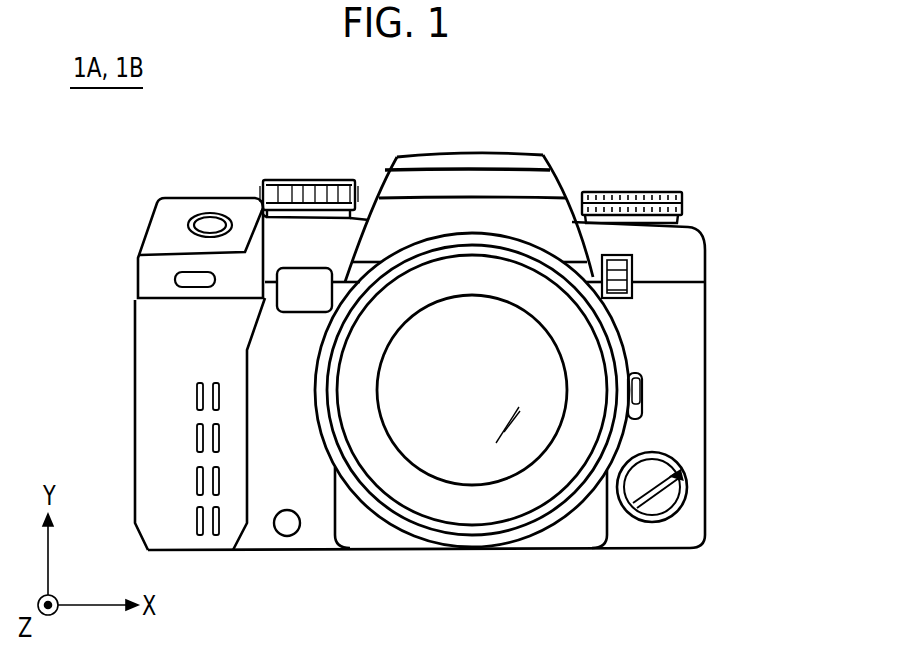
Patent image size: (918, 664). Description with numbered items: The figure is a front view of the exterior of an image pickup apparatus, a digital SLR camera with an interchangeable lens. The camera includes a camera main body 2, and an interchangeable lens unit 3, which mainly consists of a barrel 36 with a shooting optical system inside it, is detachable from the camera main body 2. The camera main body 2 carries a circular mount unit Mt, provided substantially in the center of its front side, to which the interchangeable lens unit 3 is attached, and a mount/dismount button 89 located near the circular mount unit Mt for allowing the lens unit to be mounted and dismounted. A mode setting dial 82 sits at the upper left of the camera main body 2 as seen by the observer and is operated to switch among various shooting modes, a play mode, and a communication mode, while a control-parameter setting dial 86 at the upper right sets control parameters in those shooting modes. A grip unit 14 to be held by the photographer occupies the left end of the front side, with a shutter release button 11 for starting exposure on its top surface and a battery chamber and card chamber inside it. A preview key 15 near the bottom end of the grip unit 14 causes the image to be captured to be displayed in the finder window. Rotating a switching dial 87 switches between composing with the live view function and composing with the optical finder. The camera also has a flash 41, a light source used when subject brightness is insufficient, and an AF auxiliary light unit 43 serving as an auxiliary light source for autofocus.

The camera main body 2 is at (705, 343).
The interchangeable lens unit 3 is at (532, 502).
The shutter release button 11 is at (213, 223).
The grip unit 14 is at (143, 408).
The preview key 15 is at (285, 533).
The barrel 36 is at (617, 322).
The flash 41 is at (563, 156).
The AF auxiliary light unit 43 is at (292, 305).
The mode setting dial 82 is at (306, 180).
The control-parameter setting dial 86 is at (633, 192).
The switching dial 87 is at (632, 268).
The mount/dismount button 89 is at (642, 400).
The circular mount unit Mt is at (355, 498).